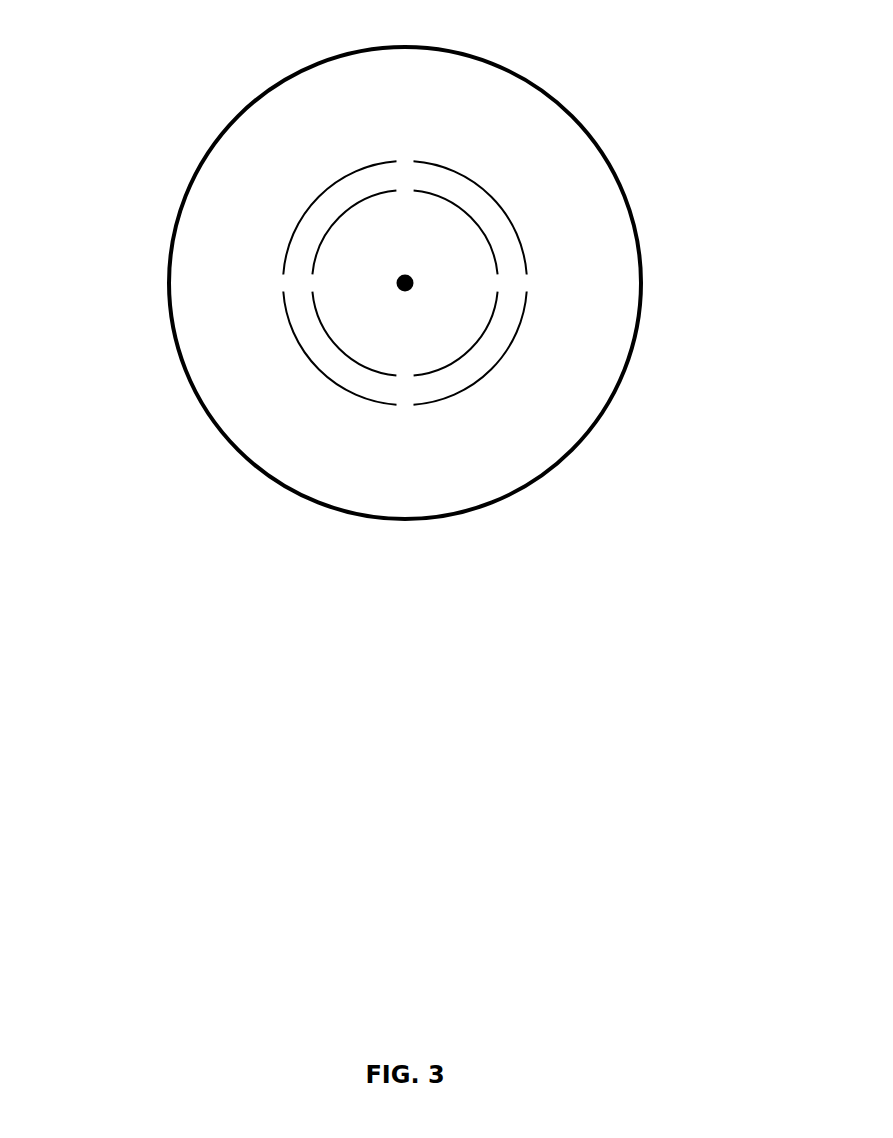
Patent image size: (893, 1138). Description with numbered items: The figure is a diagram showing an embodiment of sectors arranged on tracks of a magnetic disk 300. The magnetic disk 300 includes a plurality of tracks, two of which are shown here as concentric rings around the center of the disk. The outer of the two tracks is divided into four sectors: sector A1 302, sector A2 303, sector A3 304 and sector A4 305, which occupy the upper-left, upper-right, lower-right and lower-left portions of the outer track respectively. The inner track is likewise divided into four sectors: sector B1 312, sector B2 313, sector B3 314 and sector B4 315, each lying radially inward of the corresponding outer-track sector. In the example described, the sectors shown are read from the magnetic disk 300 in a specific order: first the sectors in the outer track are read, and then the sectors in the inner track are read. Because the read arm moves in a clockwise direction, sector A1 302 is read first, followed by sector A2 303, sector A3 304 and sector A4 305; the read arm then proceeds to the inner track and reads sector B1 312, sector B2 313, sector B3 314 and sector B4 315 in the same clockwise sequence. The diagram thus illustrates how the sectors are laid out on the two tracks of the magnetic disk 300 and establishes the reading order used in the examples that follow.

The magnetic disk 300 is at (641, 286).
The sector A1 302 is at (320, 193).
The sector A2 303 is at (490, 193).
The sector A3 304 is at (490, 375).
The sector A4 305 is at (320, 375).
The sector B1 312 is at (340, 217).
The sector B2 313 is at (470, 217).
The sector B3 314 is at (470, 352).
The sector B4 315 is at (340, 352).